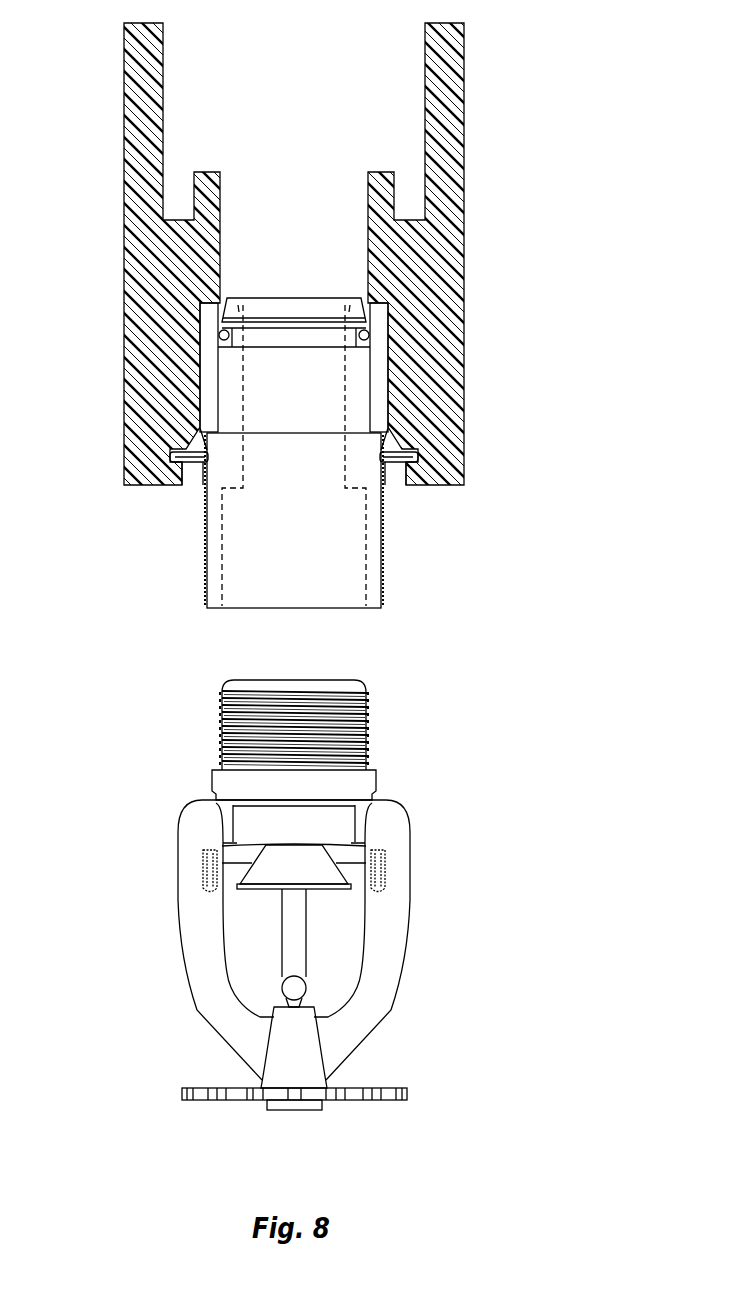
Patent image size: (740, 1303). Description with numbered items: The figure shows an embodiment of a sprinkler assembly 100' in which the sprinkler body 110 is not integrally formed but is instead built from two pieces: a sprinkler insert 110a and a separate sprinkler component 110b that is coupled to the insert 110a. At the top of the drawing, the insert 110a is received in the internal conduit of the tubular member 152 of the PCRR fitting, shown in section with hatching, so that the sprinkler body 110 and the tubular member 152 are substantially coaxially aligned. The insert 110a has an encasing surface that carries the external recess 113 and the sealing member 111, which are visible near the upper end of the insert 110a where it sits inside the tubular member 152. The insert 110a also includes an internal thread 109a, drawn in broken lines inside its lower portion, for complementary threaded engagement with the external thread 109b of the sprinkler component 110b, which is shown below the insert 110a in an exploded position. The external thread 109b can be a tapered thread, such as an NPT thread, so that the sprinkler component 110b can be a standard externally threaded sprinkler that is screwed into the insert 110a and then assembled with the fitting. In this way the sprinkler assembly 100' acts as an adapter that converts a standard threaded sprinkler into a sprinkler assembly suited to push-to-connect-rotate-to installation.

The tubular member 152 is at (135, 196).
The external recess 113 is at (275, 335).
The sealing member 111 is at (220, 335).
The sprinkler body 110 is at (533, 592).
The sprinkler insert 110a is at (362, 462).
The sprinkler component 110b is at (325, 738).
The internal thread 109a is at (222, 555).
The external thread 109b is at (222, 729).
The sprinkler assembly 100' is at (347, 679).